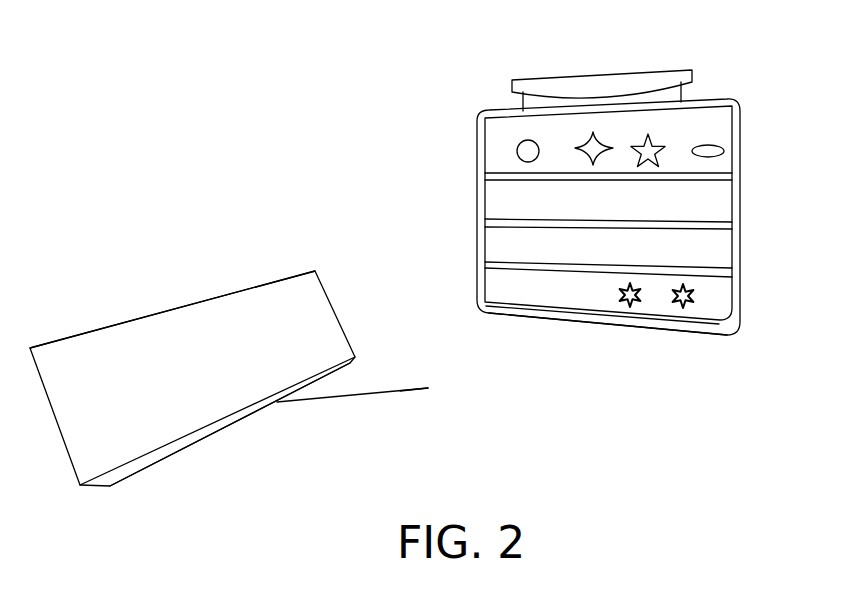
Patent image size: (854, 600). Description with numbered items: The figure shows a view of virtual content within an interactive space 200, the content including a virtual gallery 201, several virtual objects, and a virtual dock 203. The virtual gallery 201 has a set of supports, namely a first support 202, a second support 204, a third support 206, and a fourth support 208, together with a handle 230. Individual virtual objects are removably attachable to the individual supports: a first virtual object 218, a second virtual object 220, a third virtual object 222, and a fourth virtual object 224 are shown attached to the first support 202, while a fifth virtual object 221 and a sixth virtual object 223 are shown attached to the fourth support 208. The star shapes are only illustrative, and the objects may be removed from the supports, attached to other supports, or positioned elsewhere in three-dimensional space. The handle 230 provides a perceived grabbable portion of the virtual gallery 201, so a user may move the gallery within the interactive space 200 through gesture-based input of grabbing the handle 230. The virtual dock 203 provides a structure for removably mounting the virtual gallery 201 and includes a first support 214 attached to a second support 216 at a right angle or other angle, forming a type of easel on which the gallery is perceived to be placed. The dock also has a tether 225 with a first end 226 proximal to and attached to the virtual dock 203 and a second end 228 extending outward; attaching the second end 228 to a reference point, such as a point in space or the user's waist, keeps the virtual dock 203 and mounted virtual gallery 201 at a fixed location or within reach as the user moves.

The interactive space 200 is at (311, 166).
The virtual gallery 201 is at (470, 74).
The first support 202 is at (675, 177).
The virtual dock 203 is at (268, 283).
The second support 204 is at (663, 228).
The third support 206 is at (517, 266).
The fourth support 208 is at (552, 305).
The first support 214 is at (172, 383).
The second support 216 is at (118, 486).
The first virtual object 218 is at (517, 153).
The second virtual object 220 is at (593, 132).
The fifth virtual object 221 is at (687, 303).
The third virtual object 222 is at (650, 137).
The sixth virtual object 223 is at (630, 303).
The fourth virtual object 224 is at (733, 152).
The tether 225 is at (337, 398).
The first end 226 is at (263, 408).
The second end 228 is at (427, 390).
The handle 230 is at (650, 74).